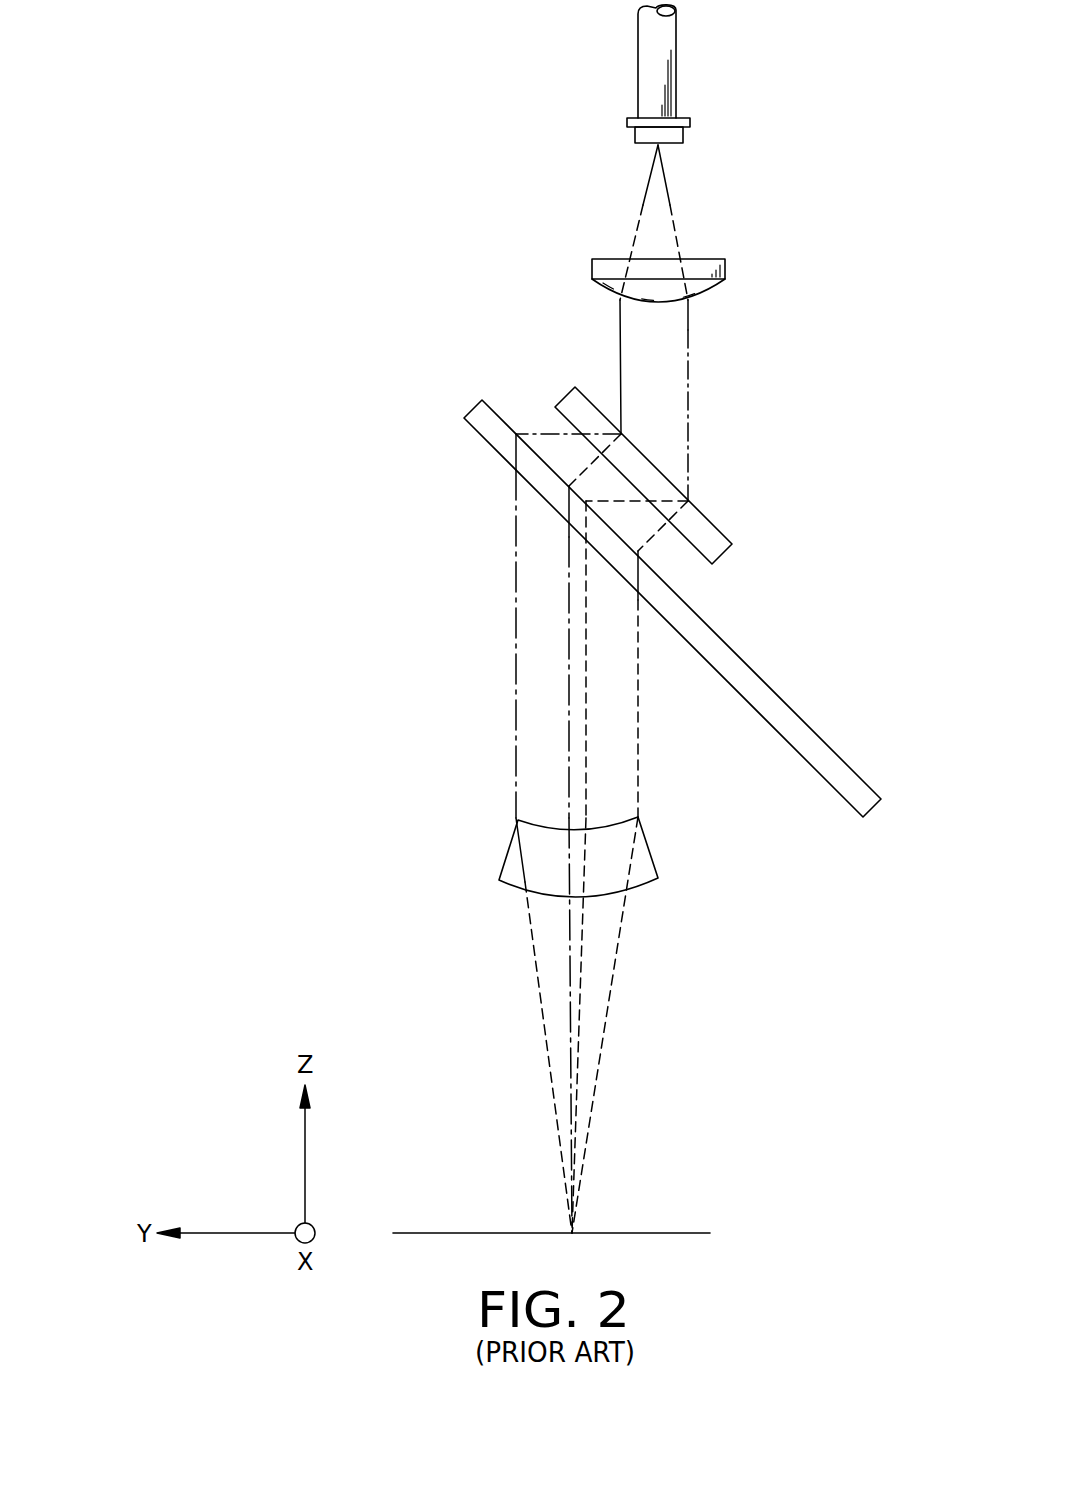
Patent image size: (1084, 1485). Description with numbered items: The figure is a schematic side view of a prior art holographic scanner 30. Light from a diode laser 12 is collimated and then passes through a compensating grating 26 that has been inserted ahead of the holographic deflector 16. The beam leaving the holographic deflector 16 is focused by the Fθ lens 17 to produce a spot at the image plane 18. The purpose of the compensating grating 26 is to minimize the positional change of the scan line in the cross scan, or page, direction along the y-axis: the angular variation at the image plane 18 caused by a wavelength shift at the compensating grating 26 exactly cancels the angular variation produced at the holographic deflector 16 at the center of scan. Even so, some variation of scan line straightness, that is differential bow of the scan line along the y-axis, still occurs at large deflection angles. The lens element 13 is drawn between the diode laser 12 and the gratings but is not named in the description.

The diode laser 12 is at (676, 62).
The collimating lens 13 is at (680, 231).
The holographic deflector 16 is at (788, 702).
The Fθ lens 17 is at (508, 850).
The image plane 18 is at (667, 1233).
The compensating grating 26 is at (717, 524).
The holographic scanner 30 is at (832, 330).